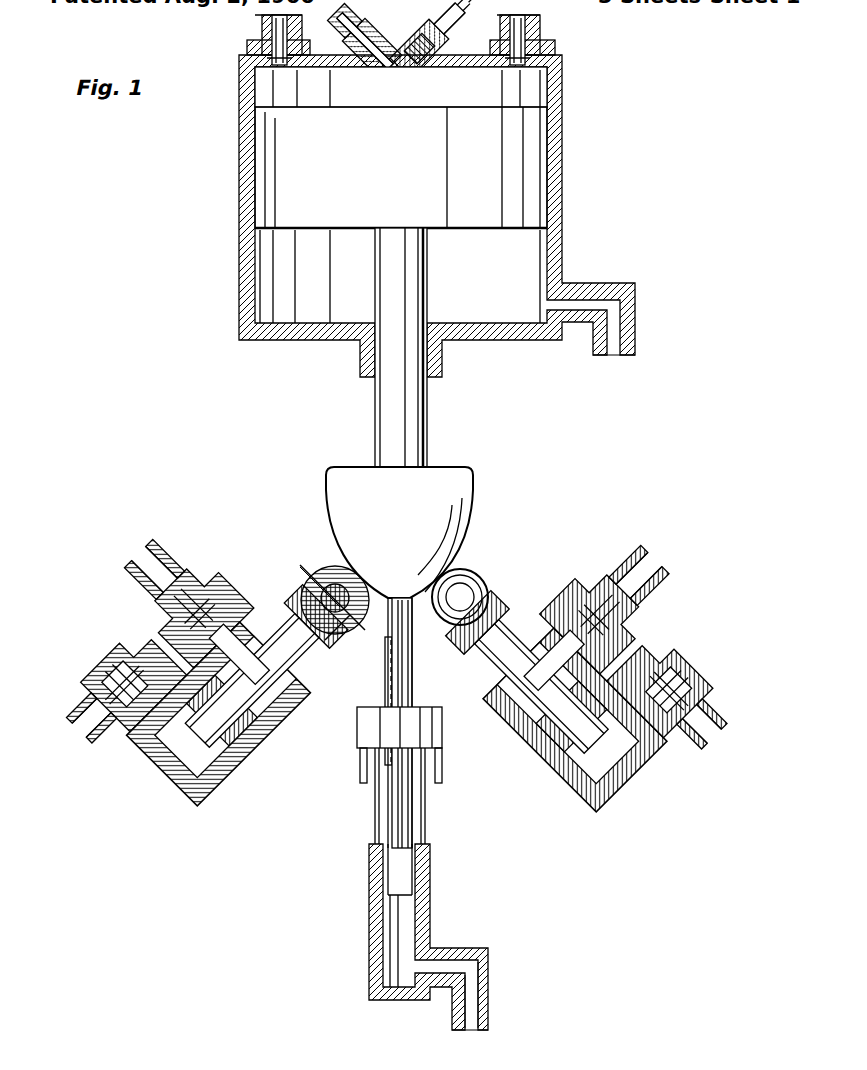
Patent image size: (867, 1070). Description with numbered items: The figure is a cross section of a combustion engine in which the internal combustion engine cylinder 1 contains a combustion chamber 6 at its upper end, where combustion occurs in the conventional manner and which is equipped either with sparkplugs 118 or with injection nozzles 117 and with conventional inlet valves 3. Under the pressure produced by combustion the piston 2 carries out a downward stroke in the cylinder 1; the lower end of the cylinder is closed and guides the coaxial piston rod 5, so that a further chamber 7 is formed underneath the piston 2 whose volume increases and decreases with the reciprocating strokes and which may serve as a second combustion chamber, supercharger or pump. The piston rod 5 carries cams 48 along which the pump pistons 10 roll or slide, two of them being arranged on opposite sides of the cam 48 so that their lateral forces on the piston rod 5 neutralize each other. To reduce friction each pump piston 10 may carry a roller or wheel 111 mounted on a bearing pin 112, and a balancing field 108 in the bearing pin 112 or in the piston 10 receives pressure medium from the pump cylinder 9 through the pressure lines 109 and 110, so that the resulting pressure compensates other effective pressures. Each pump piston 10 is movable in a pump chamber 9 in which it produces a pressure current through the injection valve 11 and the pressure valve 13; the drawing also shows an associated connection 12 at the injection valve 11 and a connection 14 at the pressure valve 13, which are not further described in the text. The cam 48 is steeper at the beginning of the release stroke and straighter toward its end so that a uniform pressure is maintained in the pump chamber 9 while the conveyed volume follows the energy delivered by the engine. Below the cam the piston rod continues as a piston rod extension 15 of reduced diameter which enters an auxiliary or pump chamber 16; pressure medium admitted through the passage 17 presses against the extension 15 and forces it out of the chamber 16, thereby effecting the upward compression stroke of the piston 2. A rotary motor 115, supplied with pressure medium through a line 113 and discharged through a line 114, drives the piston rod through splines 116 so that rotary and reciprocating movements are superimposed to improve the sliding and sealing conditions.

The cylinder 1 is at (558, 204).
The piston 2 is at (405, 157).
The inlet valve 3 is at (538, 38).
The piston rod 5 is at (376, 445).
The combustion chamber 6 is at (450, 87).
The further chamber 7 is at (460, 272).
The pump chamber 9 is at (190, 742).
The pump piston 10 is at (272, 632).
The injection valve 11 is at (88, 670).
The outlet nozzle 12 is at (82, 716).
The pressure valve 13 is at (160, 608).
The inlet nozzle 14 is at (148, 560).
The piston rod extension 15 is at (392, 824).
The auxiliary or pump chamber 16 is at (408, 917).
The passage 17 is at (470, 990).
The cam 48 is at (428, 496).
The balancing field 108 is at (322, 570).
The pressure line 109 is at (340, 632).
The pressure line 110 is at (247, 745).
The roller or wheel 111 is at (321, 594).
The bearing pin 112 is at (316, 582).
The line 113 is at (442, 773).
The line 114 is at (360, 772).
The rotary motor 115 is at (372, 727).
The splines 116 is at (384, 690).
The injection nozzle 117 is at (385, 52).
The sparkplug 118 is at (440, 54).